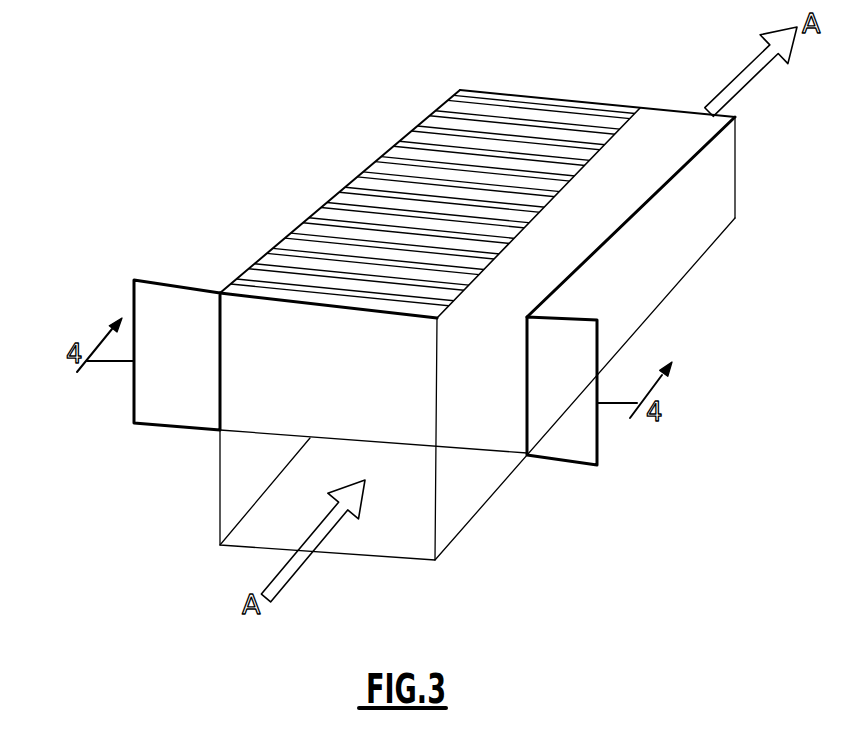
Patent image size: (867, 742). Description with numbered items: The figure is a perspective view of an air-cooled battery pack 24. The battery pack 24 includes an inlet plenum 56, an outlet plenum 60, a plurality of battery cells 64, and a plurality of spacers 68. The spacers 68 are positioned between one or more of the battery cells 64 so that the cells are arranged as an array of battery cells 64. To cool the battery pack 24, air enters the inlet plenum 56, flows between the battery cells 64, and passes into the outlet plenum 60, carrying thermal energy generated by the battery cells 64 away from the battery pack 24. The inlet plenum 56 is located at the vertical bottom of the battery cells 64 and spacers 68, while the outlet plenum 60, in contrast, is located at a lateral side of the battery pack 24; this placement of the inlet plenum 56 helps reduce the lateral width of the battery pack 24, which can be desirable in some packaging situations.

The battery pack 24 is at (255, 198).
The inlet plenum 56 is at (472, 473).
The outlet plenum 60 is at (665, 262).
The battery cells 64 is at (238, 365).
The spacers 68 is at (253, 273).